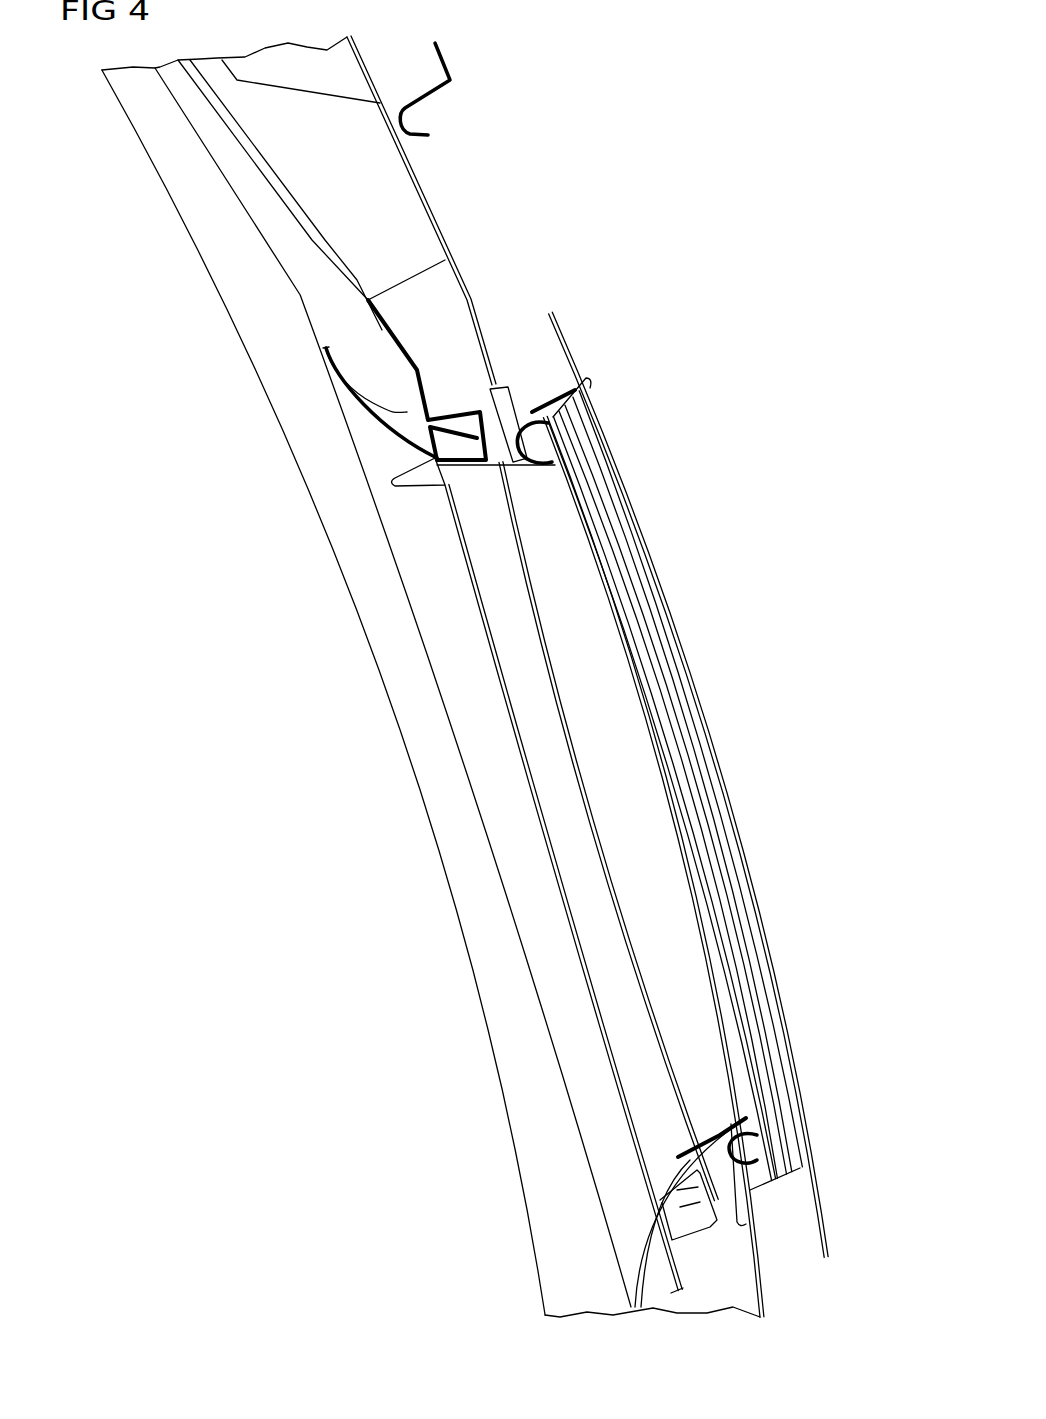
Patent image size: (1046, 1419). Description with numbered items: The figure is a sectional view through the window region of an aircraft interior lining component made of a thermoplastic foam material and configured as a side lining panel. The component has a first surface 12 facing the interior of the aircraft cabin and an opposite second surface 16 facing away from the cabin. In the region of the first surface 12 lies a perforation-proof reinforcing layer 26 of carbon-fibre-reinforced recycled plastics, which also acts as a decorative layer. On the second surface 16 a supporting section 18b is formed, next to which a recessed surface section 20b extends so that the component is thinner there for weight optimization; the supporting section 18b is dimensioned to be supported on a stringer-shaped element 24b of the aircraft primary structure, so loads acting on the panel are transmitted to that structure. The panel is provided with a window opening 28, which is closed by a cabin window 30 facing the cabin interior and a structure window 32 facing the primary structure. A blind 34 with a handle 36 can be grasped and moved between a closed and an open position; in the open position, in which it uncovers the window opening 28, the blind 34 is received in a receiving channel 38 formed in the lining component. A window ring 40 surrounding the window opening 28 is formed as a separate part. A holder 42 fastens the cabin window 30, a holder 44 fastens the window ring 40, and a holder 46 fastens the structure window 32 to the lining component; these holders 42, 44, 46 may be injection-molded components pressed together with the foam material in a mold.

The first surface 12 is at (531, 1215).
The second surface 16 is at (768, 1273).
The supporting section 18b is at (372, 118).
The surface section 20b is at (238, 78).
The element of the primary structure 24b is at (449, 60).
The reinforcing layer 26 is at (145, 130).
The window opening 28 is at (623, 1184).
The cabin window 30 is at (570, 733).
The structure window 32 is at (800, 1098).
The blind 34 is at (452, 513).
The handle 36 is at (405, 484).
The receiving channel 38 is at (303, 217).
The window ring 40 is at (382, 430).
The holder 42 is at (710, 1193).
The holder 44 is at (690, 1230).
The holder 46 is at (522, 417).